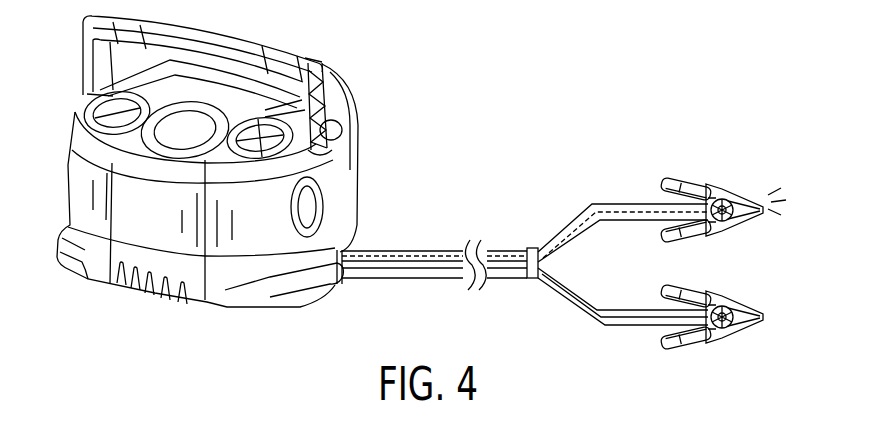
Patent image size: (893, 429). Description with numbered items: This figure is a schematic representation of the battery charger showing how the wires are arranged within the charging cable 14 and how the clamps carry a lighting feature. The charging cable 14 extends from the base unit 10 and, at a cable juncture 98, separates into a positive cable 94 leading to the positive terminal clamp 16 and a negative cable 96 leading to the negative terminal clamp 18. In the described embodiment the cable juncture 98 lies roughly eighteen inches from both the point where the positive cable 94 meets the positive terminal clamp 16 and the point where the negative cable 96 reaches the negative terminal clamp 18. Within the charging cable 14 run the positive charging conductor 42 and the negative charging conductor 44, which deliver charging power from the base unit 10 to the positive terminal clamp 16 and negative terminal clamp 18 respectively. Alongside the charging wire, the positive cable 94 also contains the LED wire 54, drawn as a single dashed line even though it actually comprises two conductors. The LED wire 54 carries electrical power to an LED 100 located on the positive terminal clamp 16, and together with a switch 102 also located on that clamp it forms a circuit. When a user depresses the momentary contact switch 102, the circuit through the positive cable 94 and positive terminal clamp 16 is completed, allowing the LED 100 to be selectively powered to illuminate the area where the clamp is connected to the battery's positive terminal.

The base unit 10 is at (64, 174).
The charging cable 14 is at (430, 257).
The positive charging conductor 42 is at (434, 256).
The negative charging conductor 44 is at (384, 270).
The LED wire 54 is at (435, 245).
The cable juncture 98 is at (531, 247).
The positive cable 94 is at (648, 202).
The negative cable 96 is at (620, 325).
The positive terminal clamp 16 is at (724, 194).
The negative terminal clamp 18 is at (737, 338).
The LED 100 is at (758, 196).
The switch 102 is at (683, 173).